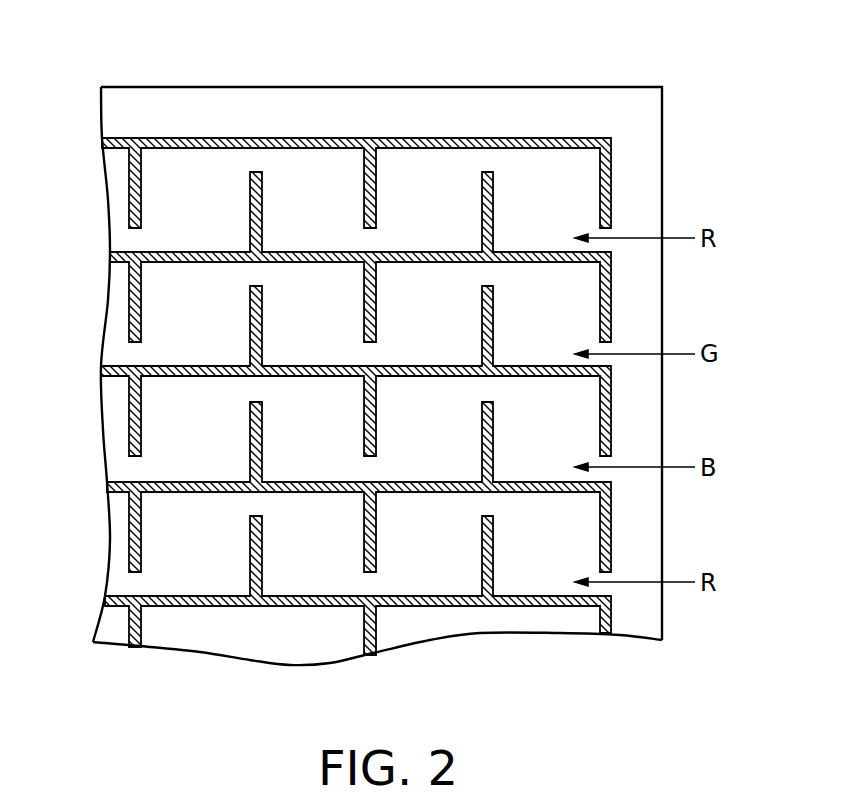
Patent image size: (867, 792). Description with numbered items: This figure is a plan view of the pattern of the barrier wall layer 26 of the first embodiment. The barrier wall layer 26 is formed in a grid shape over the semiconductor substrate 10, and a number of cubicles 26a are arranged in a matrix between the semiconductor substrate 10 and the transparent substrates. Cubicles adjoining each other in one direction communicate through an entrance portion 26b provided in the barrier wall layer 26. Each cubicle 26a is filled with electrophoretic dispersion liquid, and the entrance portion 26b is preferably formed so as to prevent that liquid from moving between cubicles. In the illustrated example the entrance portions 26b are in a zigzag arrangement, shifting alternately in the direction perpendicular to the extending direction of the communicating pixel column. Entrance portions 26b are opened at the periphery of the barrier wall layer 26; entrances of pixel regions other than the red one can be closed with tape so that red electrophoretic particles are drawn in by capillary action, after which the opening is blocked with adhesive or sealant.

The semiconductor substrate 10 is at (530, 87).
The barrier wall layer 26 is at (463, 138).
The cubicle 26a is at (549, 172).
The entrance portion 26b is at (253, 158).